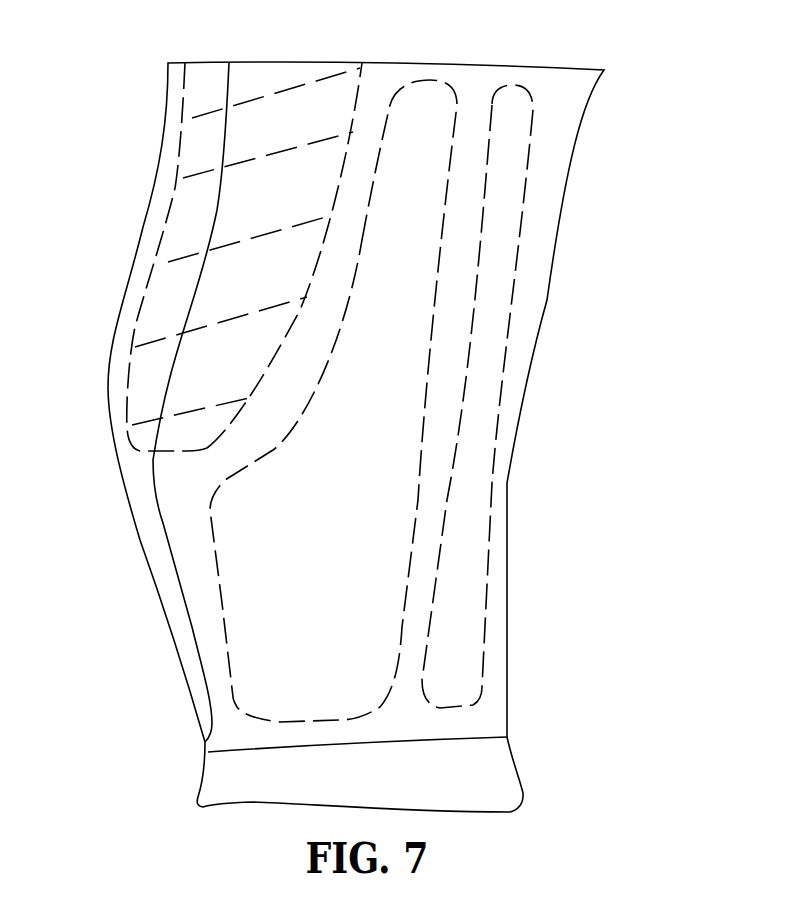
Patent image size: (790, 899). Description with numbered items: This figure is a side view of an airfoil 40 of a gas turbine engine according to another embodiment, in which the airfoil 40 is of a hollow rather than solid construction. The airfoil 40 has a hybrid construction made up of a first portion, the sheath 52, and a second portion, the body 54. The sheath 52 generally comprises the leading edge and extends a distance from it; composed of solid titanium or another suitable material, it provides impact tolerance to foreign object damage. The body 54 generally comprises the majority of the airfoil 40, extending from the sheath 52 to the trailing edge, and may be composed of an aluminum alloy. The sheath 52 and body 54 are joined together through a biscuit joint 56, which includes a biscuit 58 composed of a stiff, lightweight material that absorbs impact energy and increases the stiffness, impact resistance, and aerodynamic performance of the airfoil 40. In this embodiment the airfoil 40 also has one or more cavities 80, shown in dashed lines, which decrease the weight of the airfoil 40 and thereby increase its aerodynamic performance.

The airfoil 40 is at (652, 227).
The sheath 52 is at (148, 530).
The body 54 is at (475, 718).
The biscuit joint 56 is at (205, 138).
The biscuit 58 is at (260, 78).
The cavities 80 is at (297, 583).